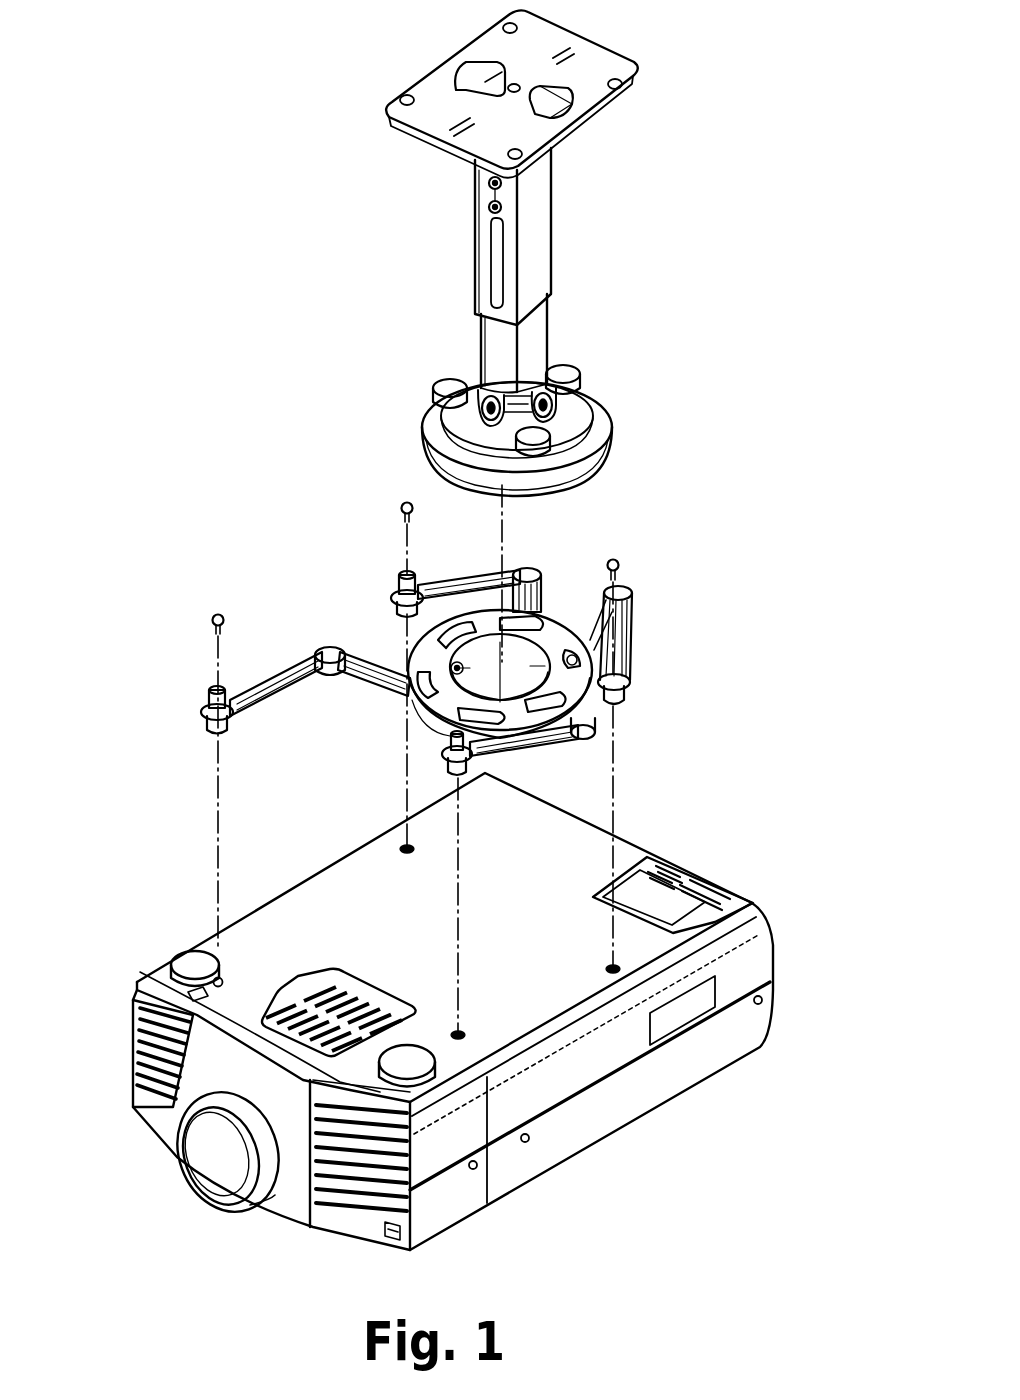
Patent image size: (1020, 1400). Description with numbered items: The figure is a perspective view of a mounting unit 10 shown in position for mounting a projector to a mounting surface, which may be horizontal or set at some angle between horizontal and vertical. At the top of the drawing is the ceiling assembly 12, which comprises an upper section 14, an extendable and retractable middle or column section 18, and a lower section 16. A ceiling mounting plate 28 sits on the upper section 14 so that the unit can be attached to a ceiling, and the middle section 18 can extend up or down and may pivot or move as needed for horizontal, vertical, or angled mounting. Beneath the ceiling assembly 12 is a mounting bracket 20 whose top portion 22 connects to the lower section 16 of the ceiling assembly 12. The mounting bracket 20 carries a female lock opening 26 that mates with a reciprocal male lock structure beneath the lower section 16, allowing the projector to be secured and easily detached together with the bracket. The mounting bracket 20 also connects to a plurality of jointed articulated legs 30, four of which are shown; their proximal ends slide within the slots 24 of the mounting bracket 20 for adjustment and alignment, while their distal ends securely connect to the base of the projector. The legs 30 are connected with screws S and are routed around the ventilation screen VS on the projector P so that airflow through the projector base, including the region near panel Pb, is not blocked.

The mounting unit 10 is at (345, 280).
The ceiling assembly 12 is at (550, 228).
The upper section 14 is at (610, 48).
The lower section 16 is at (611, 398).
The middle section 18 is at (551, 278).
The mounting bracket 20 is at (414, 650).
The top portion 22 is at (414, 725).
The slots 24 is at (592, 708).
The female lock opening 26 is at (616, 714).
The ceiling mounting plate 28 is at (412, 70).
The jointed articulated legs 30 is at (203, 714).
The screw S is at (212, 620).
The projector P is at (633, 1118).
The projector back panel Pb is at (638, 846).
The ventilation slots VS is at (213, 1050).